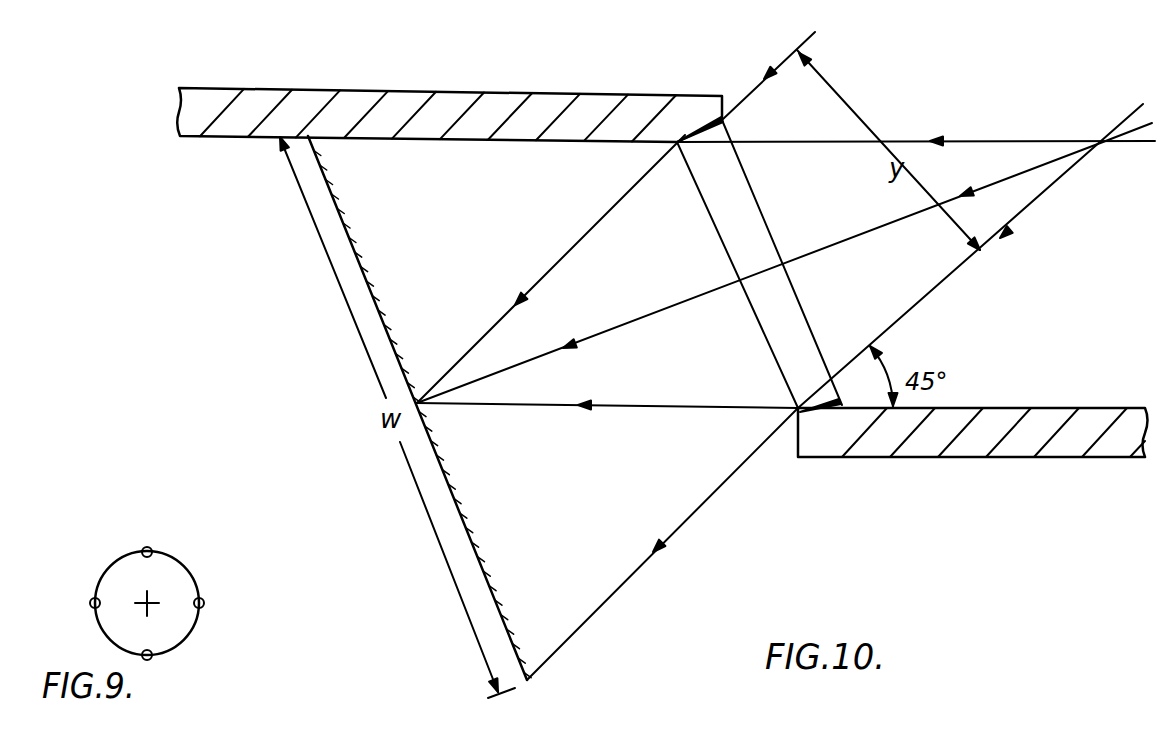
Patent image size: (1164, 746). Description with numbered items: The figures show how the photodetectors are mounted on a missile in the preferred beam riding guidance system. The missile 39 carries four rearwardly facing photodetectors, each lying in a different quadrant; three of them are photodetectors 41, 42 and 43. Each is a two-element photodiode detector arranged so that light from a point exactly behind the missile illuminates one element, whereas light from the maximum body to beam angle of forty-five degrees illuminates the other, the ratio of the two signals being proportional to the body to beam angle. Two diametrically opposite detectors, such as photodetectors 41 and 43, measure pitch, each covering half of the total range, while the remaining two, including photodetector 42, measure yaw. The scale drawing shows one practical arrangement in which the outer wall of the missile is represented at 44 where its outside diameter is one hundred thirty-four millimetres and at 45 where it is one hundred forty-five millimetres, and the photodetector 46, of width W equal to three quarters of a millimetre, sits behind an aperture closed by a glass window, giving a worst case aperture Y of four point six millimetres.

In FIG. 9, the missile 39 is at (178, 617).
In FIG. 9, the photodetector 41 is at (151, 548).
In FIG. 9, the photodetector 42 is at (204, 602).
In FIG. 9, the photodetector 43 is at (150, 660).
In FIG. 9, the outer wall of the missile 44 is at (90, 601).
In FIG. 10, the outer wall of the missile 44 is at (1013, 408).
In FIG. 10, the outer wall of the missile 45 is at (497, 92).
In FIG. 10, the photodetector 46 is at (487, 583).